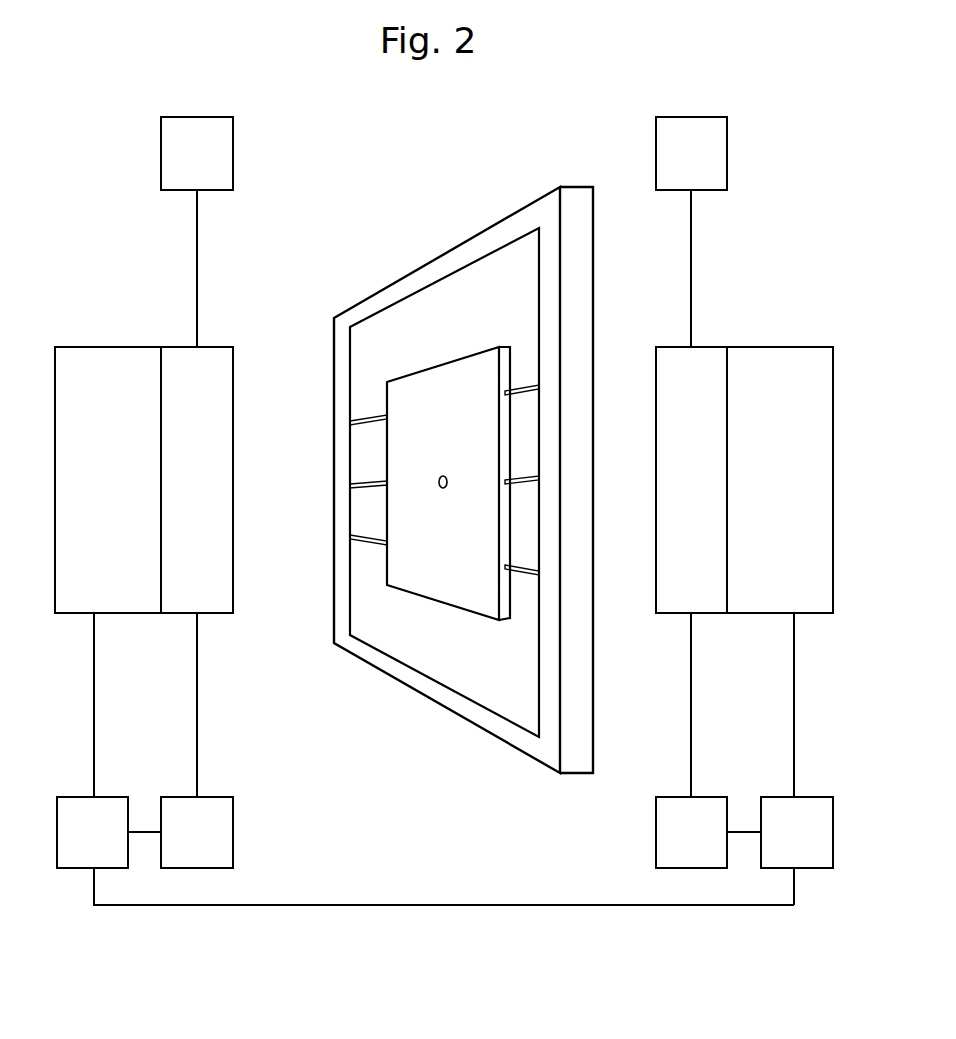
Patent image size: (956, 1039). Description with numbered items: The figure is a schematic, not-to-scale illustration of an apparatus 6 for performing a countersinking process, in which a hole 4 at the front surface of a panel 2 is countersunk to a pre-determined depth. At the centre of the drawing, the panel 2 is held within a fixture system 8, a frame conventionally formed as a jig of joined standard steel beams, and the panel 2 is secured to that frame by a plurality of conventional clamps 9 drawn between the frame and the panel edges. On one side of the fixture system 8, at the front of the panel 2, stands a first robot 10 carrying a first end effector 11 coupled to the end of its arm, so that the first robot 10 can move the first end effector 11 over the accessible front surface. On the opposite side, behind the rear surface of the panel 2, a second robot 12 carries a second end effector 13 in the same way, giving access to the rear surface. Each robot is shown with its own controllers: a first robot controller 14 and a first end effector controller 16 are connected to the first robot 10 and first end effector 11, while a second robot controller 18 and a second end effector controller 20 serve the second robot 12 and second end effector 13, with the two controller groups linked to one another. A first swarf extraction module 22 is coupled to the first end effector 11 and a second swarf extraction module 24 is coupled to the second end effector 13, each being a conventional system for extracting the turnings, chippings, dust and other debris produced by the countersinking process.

The panel 2 is at (450, 361).
The hole 4 is at (442, 476).
The apparatus 6 is at (560, 156).
The fixture system 8 is at (450, 250).
The clamps 9 is at (367, 418).
The first robot 10 is at (94, 493).
The first end effector 11 is at (183, 493).
The second robot 12 is at (766, 493).
The second end effector 13 is at (677, 493).
The first robot controller 14 is at (79, 845).
The first end effector controller 16 is at (183, 845).
The second robot controller 18 is at (783, 845).
The second end effector controller 20 is at (677, 845).
The first swarf extraction module 22 is at (183, 166).
The second swarf extraction module 24 is at (677, 166).